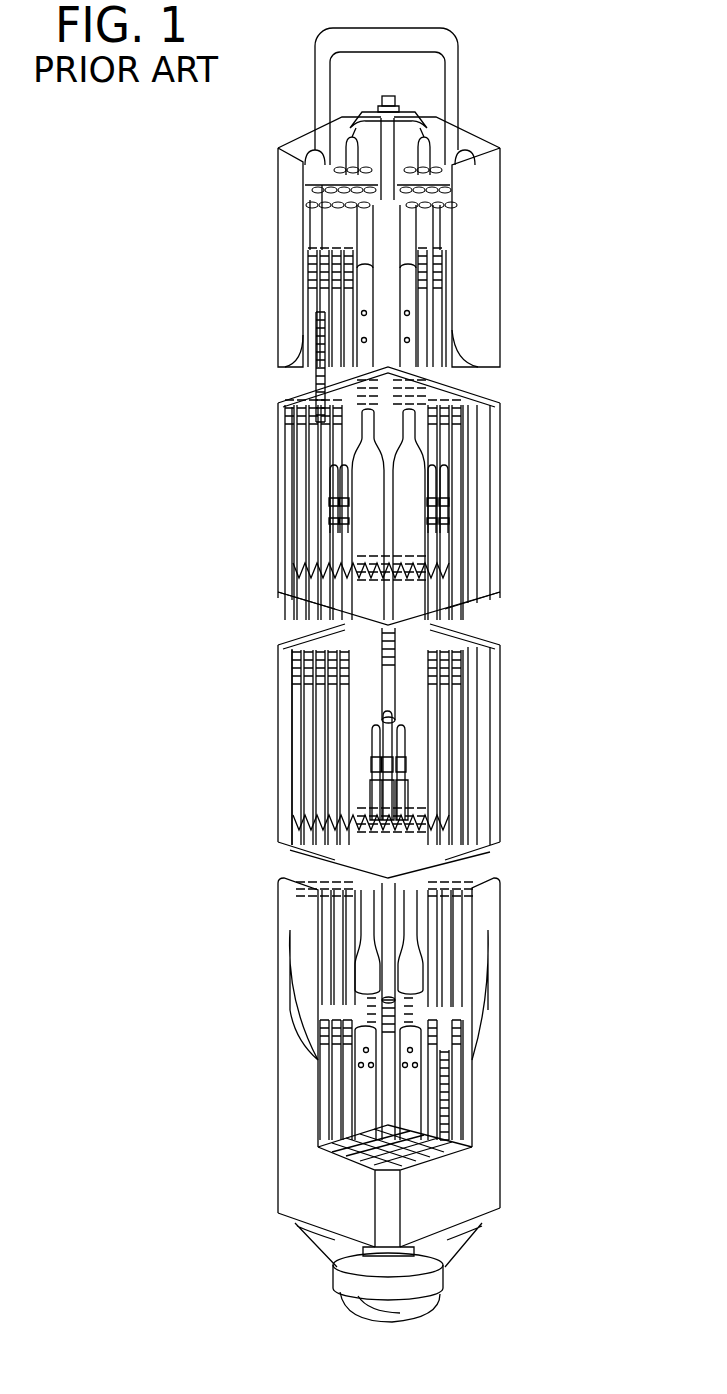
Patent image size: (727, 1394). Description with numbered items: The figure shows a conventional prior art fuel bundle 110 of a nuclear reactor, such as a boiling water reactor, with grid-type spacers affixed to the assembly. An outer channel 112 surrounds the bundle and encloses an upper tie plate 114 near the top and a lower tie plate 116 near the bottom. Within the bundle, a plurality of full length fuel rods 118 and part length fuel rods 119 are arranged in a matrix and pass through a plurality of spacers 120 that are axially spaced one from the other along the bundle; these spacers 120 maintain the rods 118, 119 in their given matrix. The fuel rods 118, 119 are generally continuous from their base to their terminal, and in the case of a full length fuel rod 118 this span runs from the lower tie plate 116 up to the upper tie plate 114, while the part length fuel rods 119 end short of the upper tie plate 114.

The fuel bundle 110 is at (530, 649).
The outer channel 112 is at (483, 298).
The upper tie plate 114 is at (438, 232).
The lower tie plate 116 is at (332, 1188).
The full length fuel rods 118 is at (455, 464).
The part length fuel rods 119 is at (402, 800).
The spacers 120 is at (302, 575).